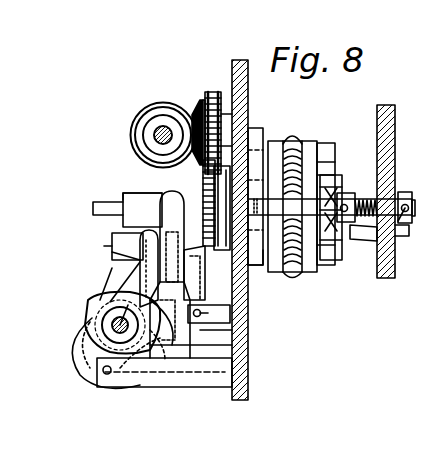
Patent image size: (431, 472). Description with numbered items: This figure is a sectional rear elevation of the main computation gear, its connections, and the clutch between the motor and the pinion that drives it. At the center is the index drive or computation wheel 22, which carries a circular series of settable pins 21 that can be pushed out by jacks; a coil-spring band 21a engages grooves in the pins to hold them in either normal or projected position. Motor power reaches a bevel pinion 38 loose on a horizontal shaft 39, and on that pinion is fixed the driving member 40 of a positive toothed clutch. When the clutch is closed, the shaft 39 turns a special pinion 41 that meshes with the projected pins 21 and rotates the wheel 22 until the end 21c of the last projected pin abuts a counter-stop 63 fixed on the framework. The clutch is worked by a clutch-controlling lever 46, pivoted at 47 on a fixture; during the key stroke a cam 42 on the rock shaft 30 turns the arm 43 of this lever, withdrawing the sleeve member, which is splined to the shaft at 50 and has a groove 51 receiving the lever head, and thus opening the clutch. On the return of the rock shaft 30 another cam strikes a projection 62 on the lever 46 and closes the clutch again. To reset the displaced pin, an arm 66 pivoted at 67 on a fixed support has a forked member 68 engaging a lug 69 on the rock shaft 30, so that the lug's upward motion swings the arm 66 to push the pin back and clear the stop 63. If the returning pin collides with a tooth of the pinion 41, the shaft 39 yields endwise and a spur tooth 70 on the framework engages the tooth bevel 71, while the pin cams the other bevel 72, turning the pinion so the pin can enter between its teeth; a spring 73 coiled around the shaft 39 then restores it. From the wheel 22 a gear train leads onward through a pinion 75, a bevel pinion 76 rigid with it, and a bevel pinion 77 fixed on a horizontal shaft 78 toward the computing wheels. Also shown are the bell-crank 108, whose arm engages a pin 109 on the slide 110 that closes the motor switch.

The pins 21 is at (334, 166).
The coil-spring band 21a is at (296, 140).
The end of the last projected pin 21c is at (265, 262).
The computation wheel 22 is at (275, 140).
The rock shaft 30 is at (110, 298).
The bevel pinion 38 is at (214, 177).
The horizontal shaft 39 is at (93, 208).
The clutch member 40 is at (192, 201).
The pinion 41 is at (339, 187).
The cam 42 is at (88, 310).
The arm 43 is at (72, 347).
The clutch-controlling lever 46 is at (195, 273).
The pivot 47 is at (104, 378).
The spline 50 is at (122, 197).
The groove 51 is at (142, 210).
The projection 62 is at (140, 332).
The counter-stop 63 is at (255, 126).
The arm 66 is at (249, 286).
The pivot 67 is at (209, 314).
The forked member 68 is at (138, 300).
The lug 69 is at (176, 362).
The spur tooth 70 is at (370, 238).
The bevel 71 is at (340, 240).
The bevel 72 is at (338, 201).
The spring 73 is at (388, 201).
The pinion 75 is at (213, 92).
The bevel pinion 76 is at (195, 104).
The bevel pinion 77 is at (133, 116).
The horizontal shaft 78 is at (163, 126).
The bell-crank 108 is at (140, 258).
The pin 109 is at (127, 246).
The slide 110 is at (94, 246).